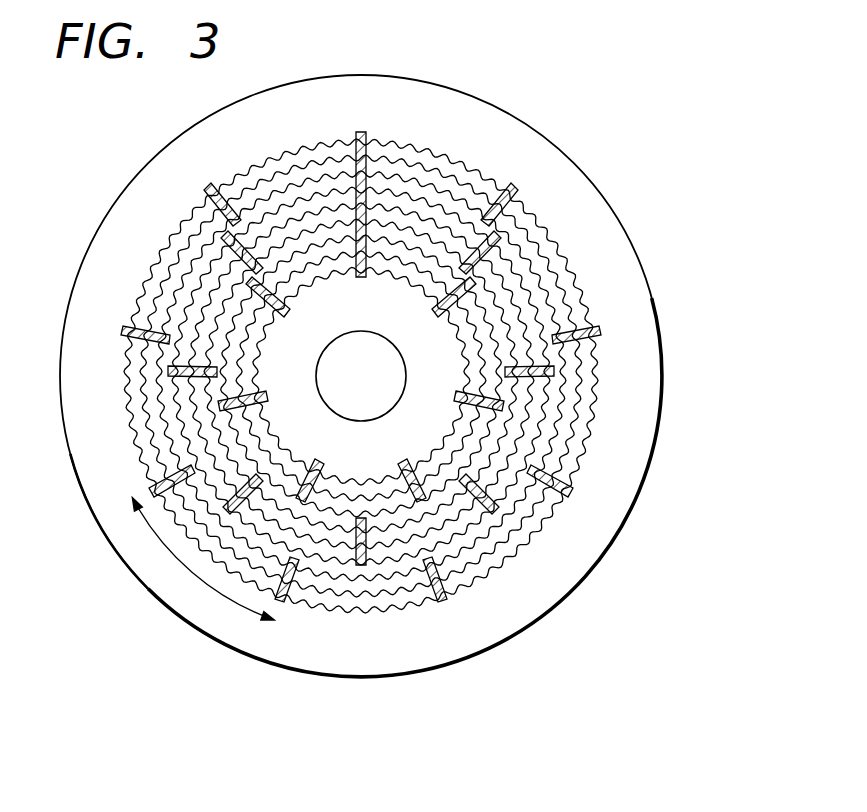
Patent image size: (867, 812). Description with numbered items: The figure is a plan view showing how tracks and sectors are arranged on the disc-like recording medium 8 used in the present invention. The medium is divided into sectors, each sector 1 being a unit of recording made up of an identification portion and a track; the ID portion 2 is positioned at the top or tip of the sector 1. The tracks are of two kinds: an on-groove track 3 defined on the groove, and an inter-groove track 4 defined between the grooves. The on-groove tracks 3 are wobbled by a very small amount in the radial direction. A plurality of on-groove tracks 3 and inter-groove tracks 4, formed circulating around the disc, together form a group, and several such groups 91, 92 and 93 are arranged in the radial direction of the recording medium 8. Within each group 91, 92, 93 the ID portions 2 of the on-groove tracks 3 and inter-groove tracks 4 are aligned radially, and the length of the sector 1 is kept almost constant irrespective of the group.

The sector 1 is at (178, 562).
The identification (ID) portion 2 is at (361, 131).
The on-groove track 3 is at (597, 392).
The inter-groove track 4 is at (577, 450).
The recording medium 8 is at (587, 537).
The group 91 is at (444, 139).
The group 92 is at (427, 187).
The group 93 is at (393, 278).